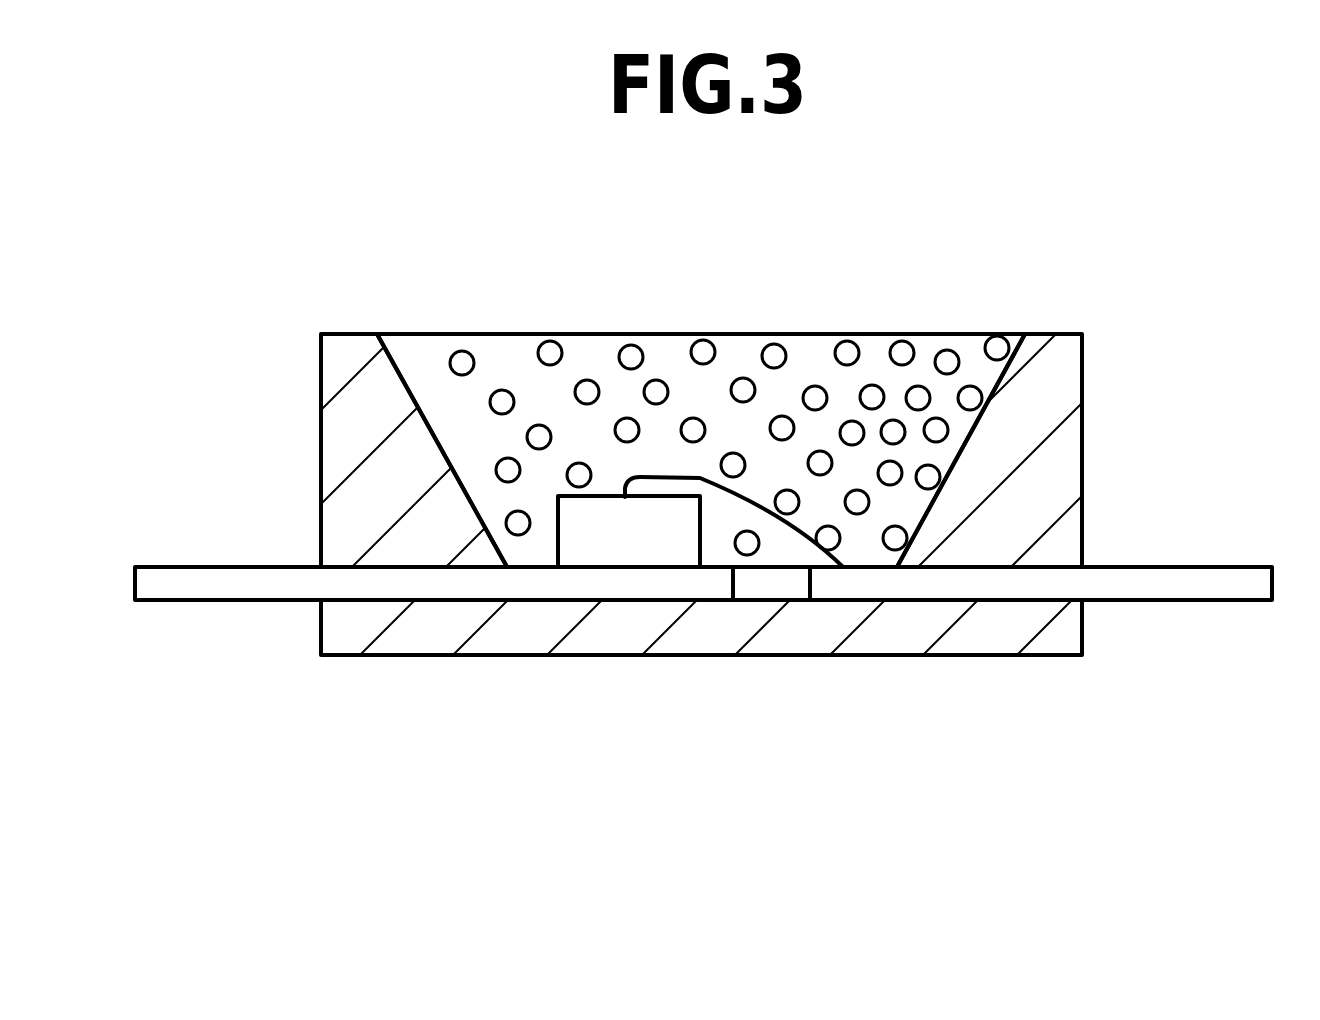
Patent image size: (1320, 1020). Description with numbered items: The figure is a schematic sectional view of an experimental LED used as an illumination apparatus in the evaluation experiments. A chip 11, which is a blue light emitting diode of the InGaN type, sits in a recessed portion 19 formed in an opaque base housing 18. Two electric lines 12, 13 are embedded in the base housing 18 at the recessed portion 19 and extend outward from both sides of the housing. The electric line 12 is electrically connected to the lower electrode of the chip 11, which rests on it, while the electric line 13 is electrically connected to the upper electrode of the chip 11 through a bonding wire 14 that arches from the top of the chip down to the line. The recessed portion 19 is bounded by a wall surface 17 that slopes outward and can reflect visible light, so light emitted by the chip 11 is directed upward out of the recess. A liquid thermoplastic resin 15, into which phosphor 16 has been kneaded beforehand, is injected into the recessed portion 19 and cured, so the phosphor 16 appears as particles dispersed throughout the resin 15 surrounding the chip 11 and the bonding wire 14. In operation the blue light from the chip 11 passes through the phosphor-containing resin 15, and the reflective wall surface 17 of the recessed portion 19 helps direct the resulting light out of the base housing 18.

The chip 11 is at (577, 520).
The electric line 12 is at (445, 584).
The electric line 13 is at (977, 585).
The bonding wire 14 is at (708, 455).
The thermoplastic resin 15 is at (838, 408).
The phosphor 16 is at (587, 388).
The wall surface 17 is at (1000, 398).
The base housing 18 is at (1042, 470).
The recessed portion 19 is at (777, 570).